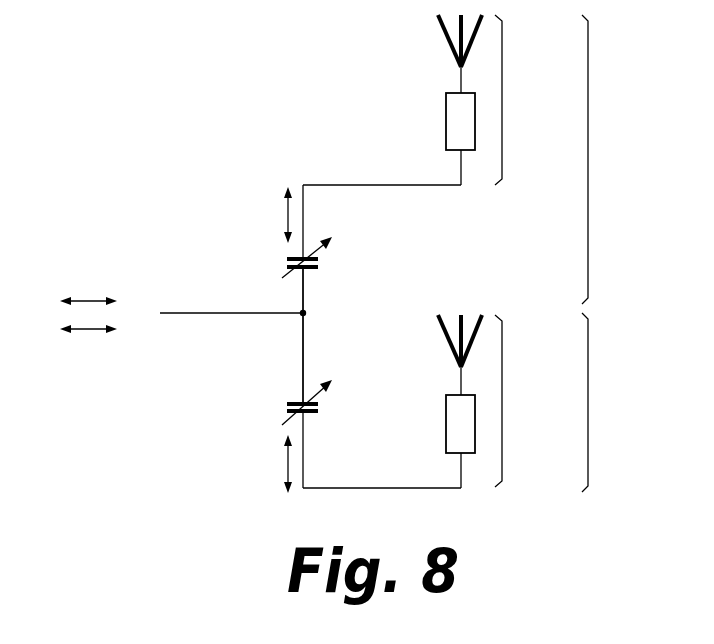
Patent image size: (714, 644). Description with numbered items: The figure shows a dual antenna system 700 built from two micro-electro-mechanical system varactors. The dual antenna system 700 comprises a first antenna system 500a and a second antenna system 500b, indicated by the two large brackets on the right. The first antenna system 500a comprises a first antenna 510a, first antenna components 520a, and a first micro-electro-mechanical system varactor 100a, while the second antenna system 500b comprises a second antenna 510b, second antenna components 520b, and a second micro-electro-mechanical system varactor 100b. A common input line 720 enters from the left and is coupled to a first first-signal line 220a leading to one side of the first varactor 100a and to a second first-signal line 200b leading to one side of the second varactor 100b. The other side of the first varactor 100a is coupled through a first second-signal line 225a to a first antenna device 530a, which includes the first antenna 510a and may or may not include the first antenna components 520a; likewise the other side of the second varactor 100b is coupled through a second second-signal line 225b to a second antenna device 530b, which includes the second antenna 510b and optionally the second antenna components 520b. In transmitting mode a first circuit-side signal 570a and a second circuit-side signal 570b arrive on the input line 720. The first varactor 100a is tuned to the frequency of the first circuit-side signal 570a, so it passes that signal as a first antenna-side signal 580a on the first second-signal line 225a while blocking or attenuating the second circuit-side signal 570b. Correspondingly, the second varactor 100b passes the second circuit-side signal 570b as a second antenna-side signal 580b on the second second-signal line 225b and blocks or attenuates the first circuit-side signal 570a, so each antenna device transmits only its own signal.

The dual antenna system 700 is at (576, 562).
The input line 720 is at (190, 313).
The first micro-electro-mechanical system varactor 100a is at (287, 258).
The second micro-electro-mechanical system varactor 100b is at (318, 411).
The transmission line segment 200b is at (303, 371).
The first first-signal line 220a is at (304, 293).
The first second-signal line 225a is at (304, 208).
The second second-signal line 225b is at (304, 461).
The first antenna system 500a is at (618, 159).
The second antenna system 500b is at (618, 402).
The first antenna 510a is at (440, 24).
The second antenna 510b is at (440, 322).
The first antenna components 520a is at (445, 113).
The second antenna components 520b is at (445, 413).
The first antenna device 530a is at (531, 100).
The second antenna device 530b is at (531, 401).
The first circuit-side signal 570a is at (90, 300).
The second circuit-side signal 570b is at (88, 333).
The first antenna-side signal 580a is at (286, 213).
The second antenna-side signal 580b is at (286, 464).